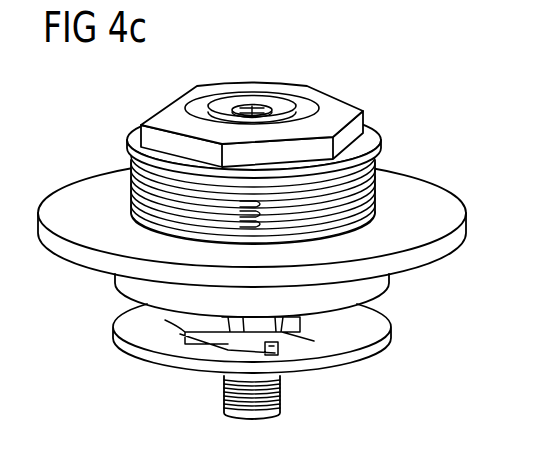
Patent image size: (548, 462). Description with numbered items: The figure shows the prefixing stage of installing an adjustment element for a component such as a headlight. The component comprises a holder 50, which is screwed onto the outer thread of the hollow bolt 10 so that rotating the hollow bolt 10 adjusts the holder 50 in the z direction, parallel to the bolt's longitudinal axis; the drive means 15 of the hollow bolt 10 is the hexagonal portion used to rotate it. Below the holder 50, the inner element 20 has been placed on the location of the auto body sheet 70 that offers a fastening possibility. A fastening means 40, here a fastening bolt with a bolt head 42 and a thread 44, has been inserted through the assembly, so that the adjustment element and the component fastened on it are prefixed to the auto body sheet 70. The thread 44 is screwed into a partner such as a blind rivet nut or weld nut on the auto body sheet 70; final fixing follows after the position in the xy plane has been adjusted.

The hollow bolt 10 is at (232, 138).
The drive means of the hollow bolt 15 is at (150, 135).
The inner element 20 is at (291, 341).
The fastening means 40 is at (249, 106).
The bolt head 42 is at (226, 100).
The thread 44 is at (223, 409).
The holder 50 is at (416, 190).
The auto body sheet 70 is at (371, 326).